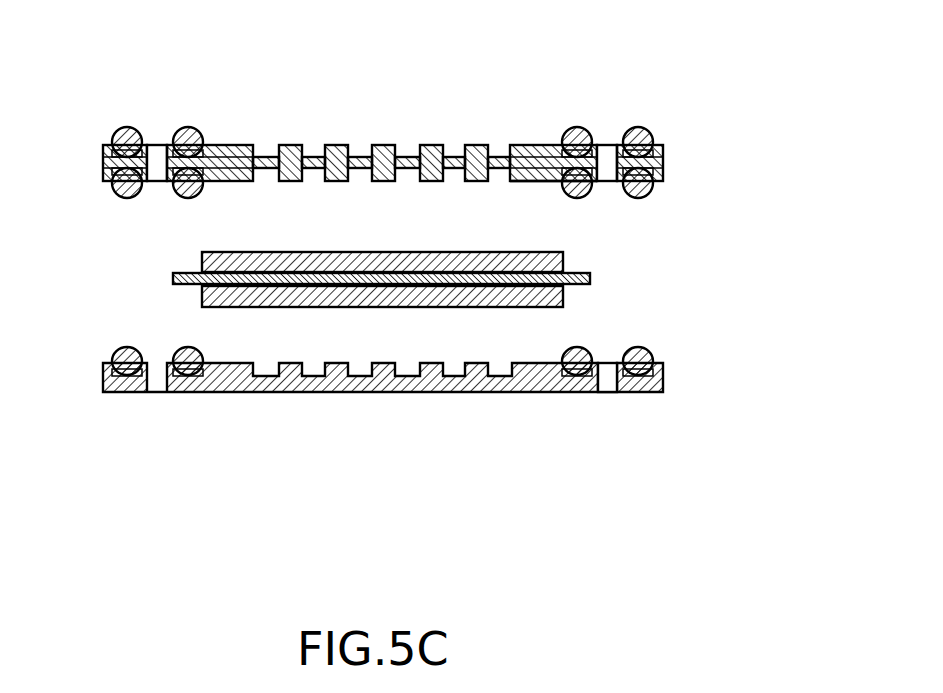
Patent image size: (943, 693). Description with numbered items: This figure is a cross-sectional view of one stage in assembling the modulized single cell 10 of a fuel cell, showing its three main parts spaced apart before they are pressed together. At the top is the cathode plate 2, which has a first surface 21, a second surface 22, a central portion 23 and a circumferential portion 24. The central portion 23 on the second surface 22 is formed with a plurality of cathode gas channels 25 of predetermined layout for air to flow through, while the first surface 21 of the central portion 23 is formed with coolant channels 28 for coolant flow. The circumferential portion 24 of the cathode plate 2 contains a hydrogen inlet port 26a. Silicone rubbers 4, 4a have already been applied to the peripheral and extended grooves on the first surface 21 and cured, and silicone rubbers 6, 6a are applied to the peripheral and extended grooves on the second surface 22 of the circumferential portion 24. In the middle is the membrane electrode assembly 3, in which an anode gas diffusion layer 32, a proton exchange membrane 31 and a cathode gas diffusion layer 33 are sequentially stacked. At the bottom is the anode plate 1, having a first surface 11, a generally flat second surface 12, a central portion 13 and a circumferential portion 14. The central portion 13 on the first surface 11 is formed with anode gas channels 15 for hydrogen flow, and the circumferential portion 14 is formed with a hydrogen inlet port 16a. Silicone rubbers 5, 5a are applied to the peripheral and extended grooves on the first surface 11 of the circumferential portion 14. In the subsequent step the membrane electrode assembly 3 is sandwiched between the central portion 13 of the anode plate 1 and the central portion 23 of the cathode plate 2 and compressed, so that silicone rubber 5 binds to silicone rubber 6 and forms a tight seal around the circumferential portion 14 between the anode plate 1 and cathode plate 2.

The anode plate 1 is at (663, 385).
The cathode plate 2 is at (412, 121).
The membrane electrode assembly 3 is at (697, 247).
The silicone rubber 4 is at (640, 127).
The silicone rubber 4a is at (577, 127).
The silicone rubber 5 is at (652, 352).
The silicone rubber 5a is at (570, 392).
The silicone rubber 6 is at (644, 198).
The silicone rubber 6a is at (589, 198).
The single cell 10 is at (80, 147).
The first surface 11 is at (530, 363).
The second surface 12 is at (503, 392).
The central portion 13 is at (523, 486).
The circumferential portion 14 is at (667, 486).
The anode gas channels 15 is at (403, 392).
The hydrogen inlet port 16a is at (608, 383).
The first surface 21 is at (537, 145).
The second surface 22 is at (540, 181).
The central portion 23 is at (523, 52).
The circumferential portion 24 is at (667, 52).
The cathode gas channels 25 is at (452, 170).
The hydrogen inlet port 26a is at (607, 130).
The coolant channels 28 is at (408, 157).
The proton exchange membrane 31 is at (590, 278).
The anode gas diffusion layer 32 is at (563, 297).
The cathode gas diffusion layer 33 is at (563, 262).